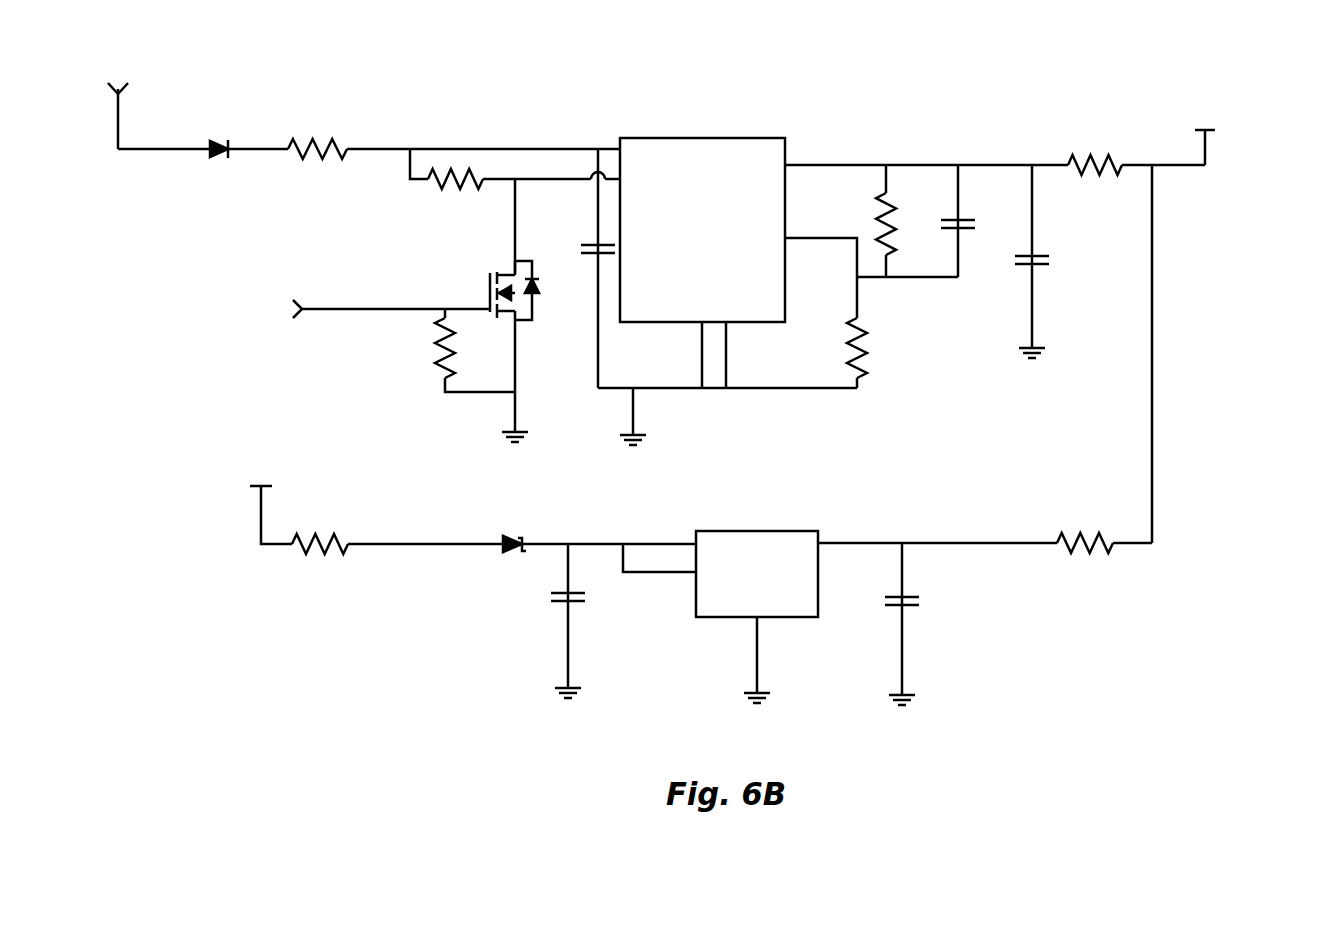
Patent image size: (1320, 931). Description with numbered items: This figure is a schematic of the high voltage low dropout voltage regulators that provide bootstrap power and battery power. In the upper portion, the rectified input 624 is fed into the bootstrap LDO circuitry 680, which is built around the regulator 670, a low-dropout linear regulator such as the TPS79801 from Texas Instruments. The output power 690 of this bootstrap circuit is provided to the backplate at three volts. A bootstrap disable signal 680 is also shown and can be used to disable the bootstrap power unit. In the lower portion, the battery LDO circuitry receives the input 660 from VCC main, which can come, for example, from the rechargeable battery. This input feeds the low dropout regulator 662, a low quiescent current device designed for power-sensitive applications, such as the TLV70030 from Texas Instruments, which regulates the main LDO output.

The rectified input 624 is at (135, 149).
The bootstrap LDO circuitry 680 is at (540, 72).
The output power 690 is at (1176, 77).
The input 660 is at (254, 444).
The regulator 670 is at (725, 236).
The low dropout regulator 662 is at (788, 587).